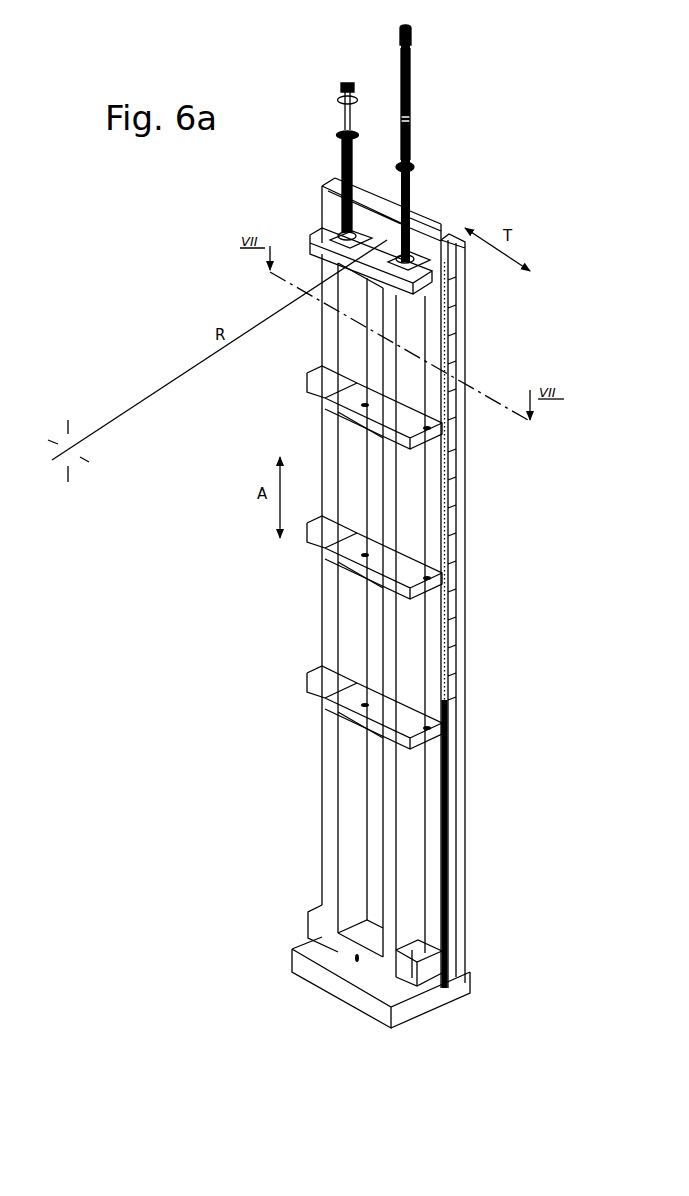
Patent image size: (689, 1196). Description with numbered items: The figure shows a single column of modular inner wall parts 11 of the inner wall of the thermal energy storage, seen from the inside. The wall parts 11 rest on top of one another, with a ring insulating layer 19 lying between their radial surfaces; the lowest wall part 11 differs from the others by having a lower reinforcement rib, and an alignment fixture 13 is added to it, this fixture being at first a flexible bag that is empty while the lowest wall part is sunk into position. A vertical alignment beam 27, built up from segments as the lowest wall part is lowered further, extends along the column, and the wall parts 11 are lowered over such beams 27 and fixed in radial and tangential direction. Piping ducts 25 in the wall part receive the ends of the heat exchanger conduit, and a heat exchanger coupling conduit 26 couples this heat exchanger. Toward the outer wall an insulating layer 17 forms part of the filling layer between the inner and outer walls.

The modular inner wall part 11 is at (480, 336).
The alignment fixture 13 is at (458, 972).
The insulating layer 17 is at (463, 364).
The ring insulating layer 19 is at (307, 394).
The piping duct 25 is at (327, 222).
The heat exchanger coupling conduit 26 is at (413, 177).
The vertical alignment beam 27 is at (410, 100).